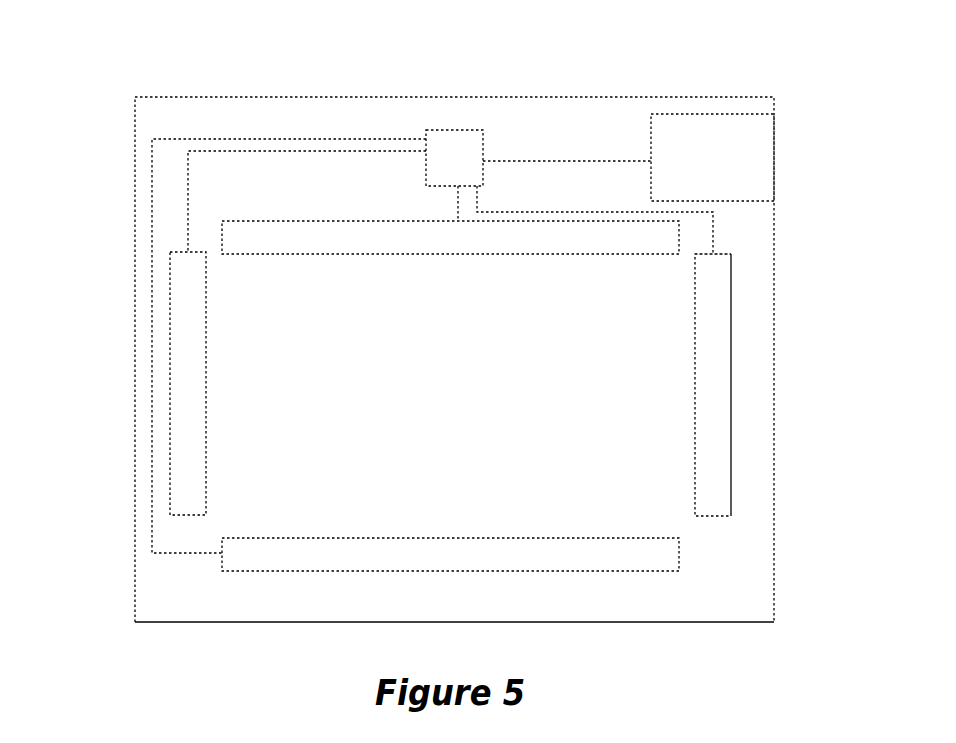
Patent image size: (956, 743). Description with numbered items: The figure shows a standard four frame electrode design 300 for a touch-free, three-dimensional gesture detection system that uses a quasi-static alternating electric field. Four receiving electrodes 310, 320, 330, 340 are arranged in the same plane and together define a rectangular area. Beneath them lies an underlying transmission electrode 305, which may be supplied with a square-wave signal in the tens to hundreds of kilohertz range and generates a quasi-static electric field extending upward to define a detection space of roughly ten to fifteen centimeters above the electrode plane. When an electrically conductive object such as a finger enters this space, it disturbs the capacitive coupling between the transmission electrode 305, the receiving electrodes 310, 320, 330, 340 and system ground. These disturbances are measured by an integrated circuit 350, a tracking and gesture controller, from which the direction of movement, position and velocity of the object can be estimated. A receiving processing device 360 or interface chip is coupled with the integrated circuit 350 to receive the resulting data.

The four frame electrode design 300 is at (537, 64).
The transmission electrode 305 is at (774, 537).
The receiving electrode 310 is at (732, 377).
The receiving electrode 320 is at (345, 553).
The receiving electrode 330 is at (188, 370).
The receiving electrode 340 is at (293, 239).
The integrated circuit 350 is at (432, 341).
The receiving processing device 360 is at (712, 157).